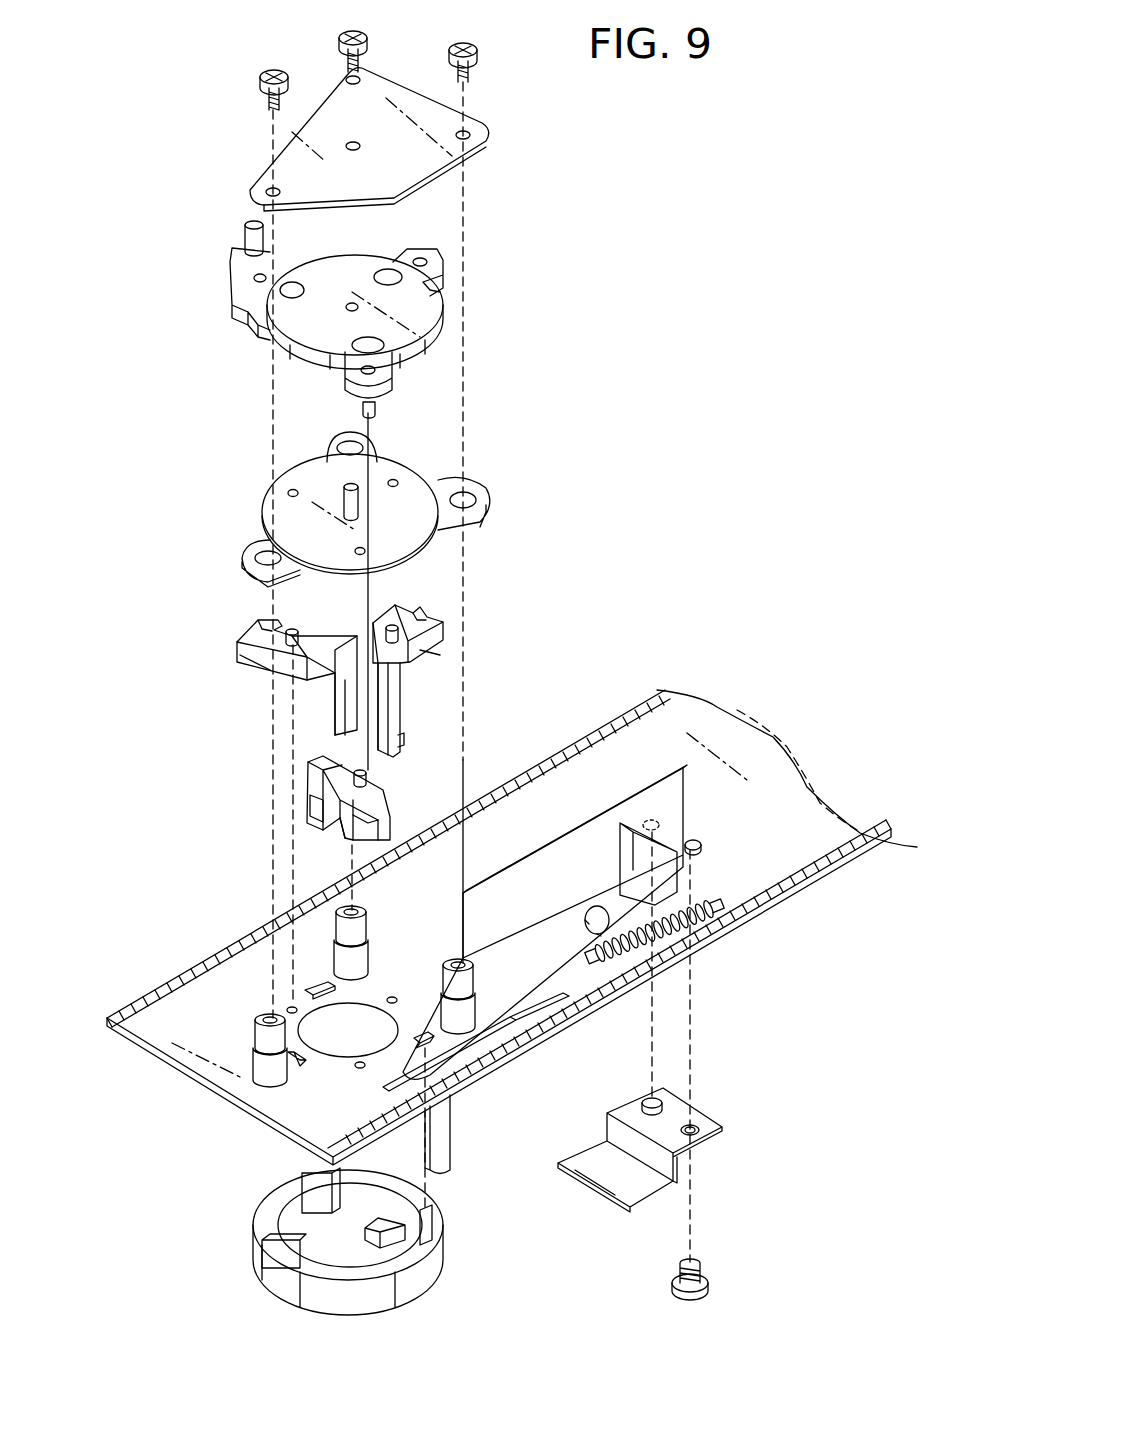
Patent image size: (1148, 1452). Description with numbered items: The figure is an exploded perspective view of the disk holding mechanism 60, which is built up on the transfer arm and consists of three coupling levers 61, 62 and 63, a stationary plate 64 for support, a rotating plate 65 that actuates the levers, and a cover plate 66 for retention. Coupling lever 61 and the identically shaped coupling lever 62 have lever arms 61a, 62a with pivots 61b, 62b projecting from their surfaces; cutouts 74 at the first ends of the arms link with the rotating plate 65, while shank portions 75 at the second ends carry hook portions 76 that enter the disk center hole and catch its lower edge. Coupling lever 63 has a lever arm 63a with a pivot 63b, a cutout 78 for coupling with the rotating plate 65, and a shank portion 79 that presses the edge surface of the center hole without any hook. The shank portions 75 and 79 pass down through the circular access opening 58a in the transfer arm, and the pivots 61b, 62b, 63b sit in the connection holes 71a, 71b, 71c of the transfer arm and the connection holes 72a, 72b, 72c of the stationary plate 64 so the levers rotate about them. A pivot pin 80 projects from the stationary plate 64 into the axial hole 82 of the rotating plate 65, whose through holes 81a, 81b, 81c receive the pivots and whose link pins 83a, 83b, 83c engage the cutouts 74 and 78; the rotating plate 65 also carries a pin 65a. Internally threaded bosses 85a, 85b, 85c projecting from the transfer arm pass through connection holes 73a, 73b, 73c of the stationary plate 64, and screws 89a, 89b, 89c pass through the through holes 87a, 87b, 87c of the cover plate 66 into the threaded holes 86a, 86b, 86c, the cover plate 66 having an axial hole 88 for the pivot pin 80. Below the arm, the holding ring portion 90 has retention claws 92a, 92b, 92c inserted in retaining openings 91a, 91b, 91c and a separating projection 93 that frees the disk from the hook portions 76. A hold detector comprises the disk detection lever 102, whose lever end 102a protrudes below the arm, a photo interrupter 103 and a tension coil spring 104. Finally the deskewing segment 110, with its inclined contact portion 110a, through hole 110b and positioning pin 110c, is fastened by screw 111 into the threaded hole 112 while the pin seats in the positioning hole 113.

The disk holding mechanism 60 is at (613, 485).
The cover plate 66 is at (400, 168).
The through hole 87a is at (468, 132).
The through hole 87b is at (348, 80).
The through hole 87c is at (280, 191).
The axial hole 88 is at (352, 142).
The screw 89a is at (478, 60).
The screw 89b is at (366, 44).
The screw 89c is at (262, 98).
The rotating plate 65 is at (425, 318).
The pin 65a is at (243, 233).
The through hole 81a is at (387, 270).
The through hole 81b is at (294, 282).
The through hole 81c is at (364, 342).
The axial hole 82 is at (350, 304).
The link pin 83a is at (428, 260).
The link pin 83b is at (252, 312).
The link pin 83c is at (378, 410).
The stationary plate 64 is at (268, 498).
The connection hole 72a is at (395, 478).
The connection hole 72b is at (295, 488).
The connection hole 72c is at (358, 546).
The connection hole 73a is at (466, 493).
The connection hole 73b is at (350, 441).
The connection hole 73c is at (265, 552).
The pivot pin 80 is at (358, 500).
The coupling lever 61 is at (445, 628).
The lever arm 61a is at (443, 650).
The pivot 61b is at (394, 624).
The coupling lever 62 is at (240, 650).
The lever arm 62a is at (268, 670).
The pivot 62b is at (294, 628).
The coupling lever 63 is at (380, 805).
The lever arm 63a is at (342, 820).
The pivot 63b is at (358, 772).
The cutout 74 is at (258, 630).
The shank portion 75 is at (345, 697).
The hook portion 76 is at (404, 740).
The cutout 78 is at (365, 843).
The shank portion 79 is at (315, 806).
The access opening 58a is at (350, 1048).
The connection hole 71a is at (391, 996).
The connection hole 71b is at (294, 1006).
The connection hole 71c is at (359, 1069).
The boss 85a is at (473, 985).
The boss 85b is at (366, 926).
The boss 85c is at (258, 1042).
The threaded hole 86a is at (456, 962).
The threaded hole 86b is at (354, 910).
The threaded hole 86c is at (266, 1015).
The retaining opening 91a is at (422, 1035).
The retaining opening 91b is at (336, 986).
The retaining opening 91c is at (297, 1066).
The holding ring portion 90 is at (262, 1228).
The retention claw 92a is at (428, 1222).
The retention claw 92b is at (310, 1180).
The retention claw 92c is at (268, 1248).
The separating projection 93 is at (410, 1255).
The disk detection lever 102 is at (548, 930).
The lever end 102a is at (452, 1150).
The photo interrupter 103 is at (680, 870).
The tension coil spring 104 is at (690, 928).
The deskewing segment 110 is at (718, 1132).
The contact portion 110a is at (578, 1160).
The through hole 110b is at (695, 1123).
The positioning pin 110c is at (648, 1098).
The screw 111 is at (710, 1283).
The threaded hole 112 is at (698, 838).
The positioning hole 113 is at (648, 818).